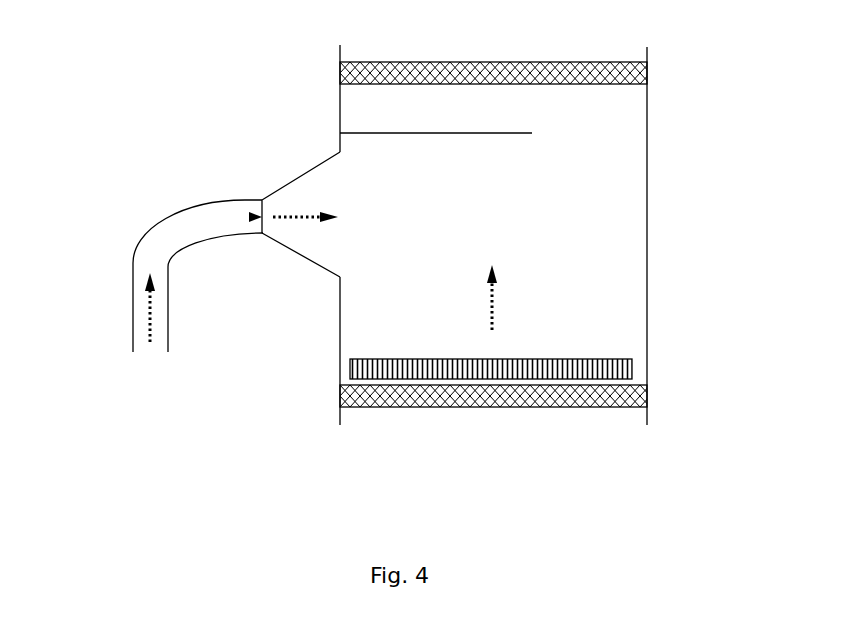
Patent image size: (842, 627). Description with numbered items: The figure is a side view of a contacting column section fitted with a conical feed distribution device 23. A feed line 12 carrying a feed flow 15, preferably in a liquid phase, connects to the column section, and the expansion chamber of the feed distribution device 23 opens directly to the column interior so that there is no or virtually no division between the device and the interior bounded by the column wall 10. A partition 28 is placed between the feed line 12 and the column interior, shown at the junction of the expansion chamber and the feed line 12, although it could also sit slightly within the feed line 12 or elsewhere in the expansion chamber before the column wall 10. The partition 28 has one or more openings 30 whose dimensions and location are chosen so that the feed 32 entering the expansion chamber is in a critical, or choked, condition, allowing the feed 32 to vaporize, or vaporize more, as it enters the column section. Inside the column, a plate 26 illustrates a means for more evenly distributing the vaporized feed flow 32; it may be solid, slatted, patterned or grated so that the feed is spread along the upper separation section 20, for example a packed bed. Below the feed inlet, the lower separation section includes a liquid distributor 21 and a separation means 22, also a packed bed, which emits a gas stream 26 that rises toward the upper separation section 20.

The column wall 10 is at (647, 233).
The feed line 12 is at (167, 220).
The feed flow 15 is at (150, 312).
The upper separation section separation means 20 is at (640, 75).
The liquid distributor 21 is at (633, 365).
The separation means 22 is at (642, 393).
The feed distribution device 23 is at (287, 250).
The plate / gas stream 26 is at (363, 132).
The partition 28 is at (243, 200).
The openings 30 is at (250, 217).
The feed / vaporized feed flow 32 is at (301, 214).